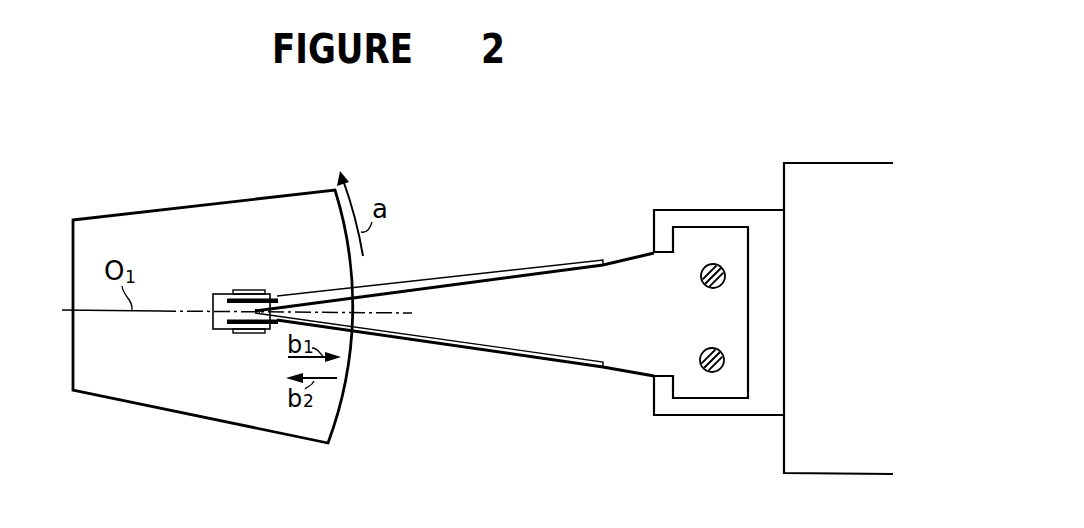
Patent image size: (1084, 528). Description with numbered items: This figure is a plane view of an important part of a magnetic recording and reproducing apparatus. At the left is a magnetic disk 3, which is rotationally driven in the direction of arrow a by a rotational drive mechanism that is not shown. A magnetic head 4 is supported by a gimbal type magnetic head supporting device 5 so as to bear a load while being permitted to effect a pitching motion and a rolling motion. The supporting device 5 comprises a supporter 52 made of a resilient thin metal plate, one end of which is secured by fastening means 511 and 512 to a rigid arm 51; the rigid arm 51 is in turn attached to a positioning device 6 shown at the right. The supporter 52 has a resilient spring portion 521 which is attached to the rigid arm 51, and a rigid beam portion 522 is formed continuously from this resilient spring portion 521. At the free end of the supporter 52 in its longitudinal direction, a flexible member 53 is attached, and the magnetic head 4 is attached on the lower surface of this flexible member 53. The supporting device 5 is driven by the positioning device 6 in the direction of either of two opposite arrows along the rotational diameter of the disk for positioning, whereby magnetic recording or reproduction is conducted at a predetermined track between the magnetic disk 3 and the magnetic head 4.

The magnetic disk 3 is at (187, 388).
The magnetic head 4 is at (246, 290).
The flexible member 53 is at (258, 310).
The gimbal type magnetic head supporting device 5 is at (466, 203).
The supporter 52 is at (454, 310).
The resilient spring portion 521 is at (625, 348).
The rigid beam portion 522 is at (448, 322).
The rigid arm 51 is at (719, 296).
The fastening means 511 is at (713, 263).
The fastening means 512 is at (715, 372).
The positioning device 6 is at (838, 162).